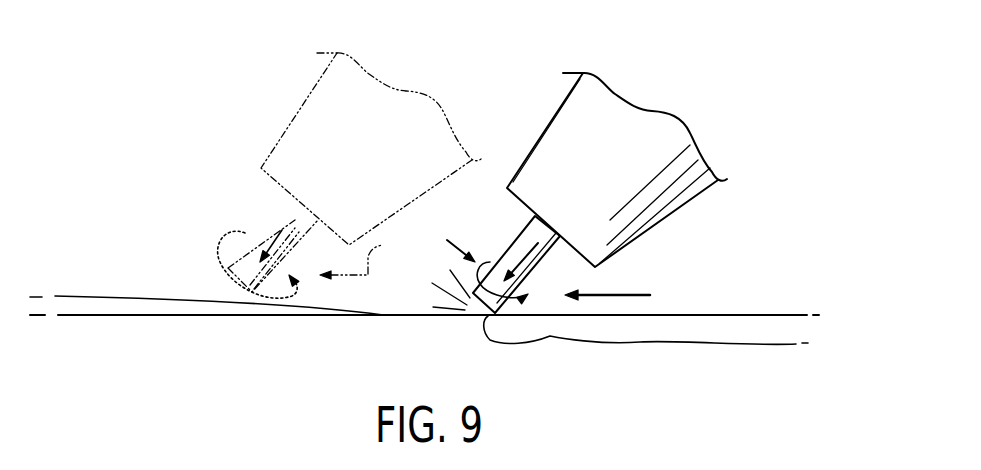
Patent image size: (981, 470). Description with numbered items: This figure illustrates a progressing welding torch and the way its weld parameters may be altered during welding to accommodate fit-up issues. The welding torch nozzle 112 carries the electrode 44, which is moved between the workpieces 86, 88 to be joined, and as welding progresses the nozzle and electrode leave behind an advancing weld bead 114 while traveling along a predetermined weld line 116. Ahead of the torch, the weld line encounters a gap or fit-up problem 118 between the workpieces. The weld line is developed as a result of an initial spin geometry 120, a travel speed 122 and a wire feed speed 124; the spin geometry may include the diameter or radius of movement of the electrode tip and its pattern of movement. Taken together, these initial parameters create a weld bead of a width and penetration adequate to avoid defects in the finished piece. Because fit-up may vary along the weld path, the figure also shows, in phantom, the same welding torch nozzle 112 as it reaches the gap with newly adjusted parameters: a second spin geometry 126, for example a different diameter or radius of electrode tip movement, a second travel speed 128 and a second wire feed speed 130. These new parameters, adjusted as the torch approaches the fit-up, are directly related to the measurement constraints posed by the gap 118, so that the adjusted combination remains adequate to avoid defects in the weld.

The welding torch nozzle 112 is at (324, 107).
The electrode 44 is at (527, 232).
The wire feed speed 124 is at (523, 242).
The initial spin geometry 120 is at (527, 300).
The travel speed 122 is at (611, 295).
The predetermined weld line 116 is at (413, 317).
The gap or fit-up problem 118 is at (145, 308).
The advancing weld bead 114 is at (703, 330).
The second wire feed speed 130 is at (270, 226).
The second travel speed 128 is at (370, 255).
The second spin geometry 126 is at (212, 228).
The workpiece 88 is at (133, 251).
The workpiece 86 is at (178, 380).